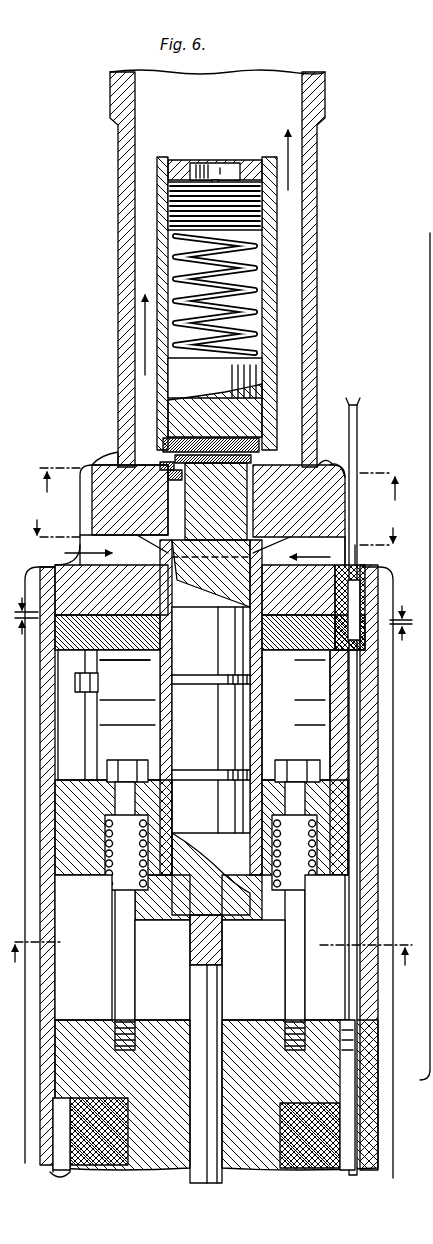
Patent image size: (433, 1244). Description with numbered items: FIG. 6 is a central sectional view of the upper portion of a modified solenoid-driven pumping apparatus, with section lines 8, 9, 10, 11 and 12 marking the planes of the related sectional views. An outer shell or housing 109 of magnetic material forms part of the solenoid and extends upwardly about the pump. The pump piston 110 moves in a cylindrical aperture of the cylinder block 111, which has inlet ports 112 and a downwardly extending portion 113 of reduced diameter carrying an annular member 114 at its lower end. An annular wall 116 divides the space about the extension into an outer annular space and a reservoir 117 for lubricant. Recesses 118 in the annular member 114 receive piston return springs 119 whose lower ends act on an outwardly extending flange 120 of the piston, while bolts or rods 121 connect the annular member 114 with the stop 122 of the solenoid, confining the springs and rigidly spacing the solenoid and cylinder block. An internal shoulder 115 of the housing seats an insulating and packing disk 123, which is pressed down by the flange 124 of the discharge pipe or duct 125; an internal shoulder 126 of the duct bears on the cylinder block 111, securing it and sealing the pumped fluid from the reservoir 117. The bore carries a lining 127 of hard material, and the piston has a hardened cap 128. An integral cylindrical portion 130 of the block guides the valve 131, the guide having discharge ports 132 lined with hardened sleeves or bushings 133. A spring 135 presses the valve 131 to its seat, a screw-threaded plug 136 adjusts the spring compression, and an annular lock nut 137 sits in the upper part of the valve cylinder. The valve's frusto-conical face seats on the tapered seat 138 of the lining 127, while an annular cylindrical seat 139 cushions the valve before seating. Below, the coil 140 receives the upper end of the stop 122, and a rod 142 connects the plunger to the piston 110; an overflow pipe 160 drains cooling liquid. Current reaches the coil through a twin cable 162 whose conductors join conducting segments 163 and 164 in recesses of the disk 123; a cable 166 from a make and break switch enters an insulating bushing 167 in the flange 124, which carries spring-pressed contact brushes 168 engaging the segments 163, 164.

The section line 8- 8 is at (221, 474).
The section line 9- 9 is at (219, 533).
The section line 10- 10 is at (219, 638).
The section line 11- 11 is at (220, 601).
The section line 12- 12 is at (213, 966).
The outer shell or housing 109 is at (430, 362).
The pump piston 110 is at (158, 707).
The cylinder block 111 is at (316, 508).
The inlet ports 112 is at (205, 550).
The downwardly extending portion 113 is at (165, 734).
The annular member 114 is at (76, 877).
The internal shoulder 115 is at (79, 676).
The annular wall 116 is at (97, 706).
The reservoir 117 is at (298, 703).
The recesses 118 is at (312, 843).
The piston return springs 119 is at (226, 940).
The outwardly extending flange 120 is at (62, 942).
The bolts or rods 121 is at (118, 976).
The stop 122 is at (258, 1012).
The insulating and packing disk 123 is at (126, 655).
The flange 124 is at (62, 578).
The discharge pipe or duct 125 is at (304, 177).
The internal shoulder 126 is at (100, 460).
The lining 127 is at (211, 537).
The cap 128 is at (168, 465).
The cylindrical portion 130 is at (270, 270).
The valve 131 is at (215, 397).
The discharge ports 132 is at (268, 470).
The sleeves or bushings 133 is at (268, 458).
The spring 135 is at (256, 318).
The screw-threaded plug 136 is at (166, 210).
The annular lock nut 137 is at (178, 170).
The tapered seat 138 is at (168, 486).
The annular cylindrical seat 139 is at (335, 470).
The coil 140 is at (430, 233).
The rod 142 is at (190, 1178).
The overflow pipe 160 is at (53, 1176).
The twin cable 162 is at (359, 867).
The conducting segment 163 is at (340, 660).
The conducting segment 164 is at (356, 640).
The cable 166 is at (358, 424).
The insulating bushing 167 is at (403, 1092).
The contact brushes 168 is at (378, 580).